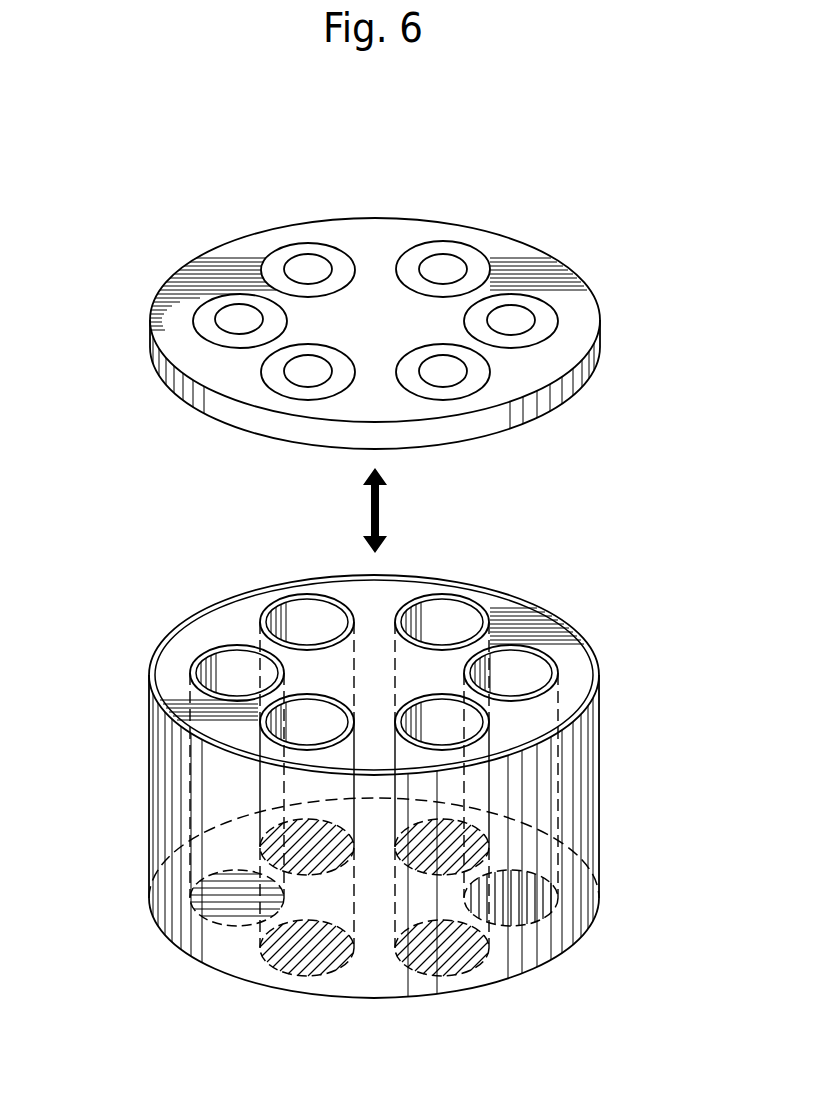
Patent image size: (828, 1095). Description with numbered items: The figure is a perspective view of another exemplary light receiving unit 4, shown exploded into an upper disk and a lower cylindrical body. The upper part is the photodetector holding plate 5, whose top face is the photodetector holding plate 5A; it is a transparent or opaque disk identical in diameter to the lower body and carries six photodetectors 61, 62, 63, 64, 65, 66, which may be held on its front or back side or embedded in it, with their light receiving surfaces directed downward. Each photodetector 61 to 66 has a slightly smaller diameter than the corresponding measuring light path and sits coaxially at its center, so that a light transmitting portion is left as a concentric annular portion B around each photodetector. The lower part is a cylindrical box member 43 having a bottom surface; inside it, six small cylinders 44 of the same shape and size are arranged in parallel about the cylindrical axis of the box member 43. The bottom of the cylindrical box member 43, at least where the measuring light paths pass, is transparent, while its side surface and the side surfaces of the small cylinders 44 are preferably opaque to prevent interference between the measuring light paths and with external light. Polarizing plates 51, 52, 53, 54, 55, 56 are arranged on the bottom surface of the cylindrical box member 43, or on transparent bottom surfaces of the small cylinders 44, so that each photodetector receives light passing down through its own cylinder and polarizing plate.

The light receiving unit 4 is at (583, 410).
The photodetector holding plate 5 is at (527, 295).
The photodetector holding plate 5A is at (497, 243).
The photodetector 61 is at (518, 320).
The photodetector 62 is at (443, 264).
The photodetector 63 is at (307, 263).
The photodetector 64 is at (232, 318).
The photodetector 65 is at (307, 375).
The photodetector 66 is at (447, 373).
The concentric annular portion B is at (543, 330).
The cylindrical box member 43 is at (600, 745).
The small cylinder 44 is at (517, 690).
The polarizing plate 51 is at (515, 897).
The polarizing plate 52 is at (447, 842).
The polarizing plate 53 is at (303, 848).
The polarizing plate 54 is at (228, 892).
The polarizing plate 55 is at (307, 942).
The polarizing plate 56 is at (433, 942).